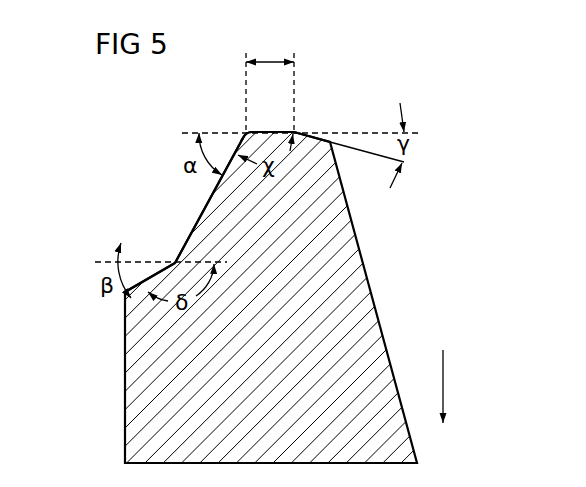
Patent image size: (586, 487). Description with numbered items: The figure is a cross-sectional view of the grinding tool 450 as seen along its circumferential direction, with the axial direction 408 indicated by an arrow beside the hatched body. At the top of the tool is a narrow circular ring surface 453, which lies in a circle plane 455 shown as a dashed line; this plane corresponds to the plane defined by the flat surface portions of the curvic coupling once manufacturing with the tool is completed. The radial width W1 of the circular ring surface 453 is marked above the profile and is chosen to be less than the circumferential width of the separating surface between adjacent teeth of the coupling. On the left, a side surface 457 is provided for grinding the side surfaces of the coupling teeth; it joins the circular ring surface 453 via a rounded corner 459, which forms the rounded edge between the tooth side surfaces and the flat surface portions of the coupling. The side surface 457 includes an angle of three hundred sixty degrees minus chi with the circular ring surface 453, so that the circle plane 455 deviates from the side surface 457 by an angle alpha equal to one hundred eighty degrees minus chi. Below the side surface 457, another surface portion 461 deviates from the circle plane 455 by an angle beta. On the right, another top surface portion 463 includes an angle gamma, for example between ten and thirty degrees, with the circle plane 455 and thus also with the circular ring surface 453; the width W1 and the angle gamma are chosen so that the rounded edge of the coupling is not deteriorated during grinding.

The grinding tool 450 is at (445, 247).
The axial direction 408 is at (444, 377).
The circular ring surface 453 is at (281, 131).
The circle plane 455 is at (373, 132).
The side surface 457 is at (214, 189).
The rounded corner 459 is at (246, 132).
The surface portion 461 is at (146, 279).
The top surface portion 463 is at (306, 133).
The width of the circular ring surface W1 is at (270, 79).